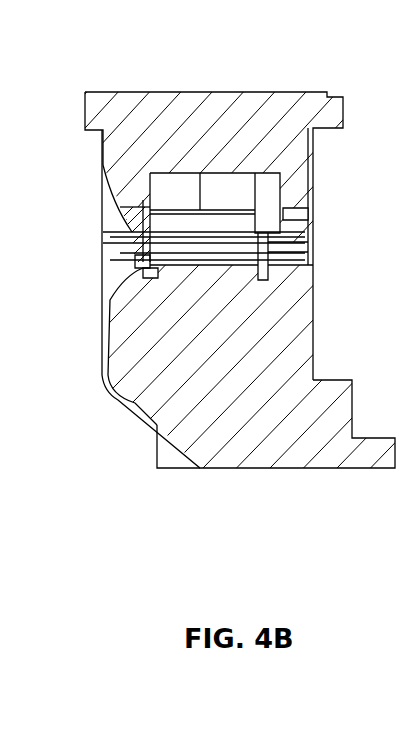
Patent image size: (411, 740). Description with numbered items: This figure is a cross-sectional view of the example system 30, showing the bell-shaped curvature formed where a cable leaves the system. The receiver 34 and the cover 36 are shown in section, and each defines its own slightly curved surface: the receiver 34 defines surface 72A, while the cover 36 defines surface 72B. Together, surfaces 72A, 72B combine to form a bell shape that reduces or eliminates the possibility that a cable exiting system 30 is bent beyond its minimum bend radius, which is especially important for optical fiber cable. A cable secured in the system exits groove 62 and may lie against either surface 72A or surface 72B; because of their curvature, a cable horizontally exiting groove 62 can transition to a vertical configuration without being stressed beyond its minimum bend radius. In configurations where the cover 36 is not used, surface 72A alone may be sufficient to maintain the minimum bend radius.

The system 30 is at (337, 63).
The cover 36 is at (200, 92).
The receiver 34 is at (135, 402).
The groove 62 is at (140, 243).
The surface 72A is at (115, 282).
The surface 72B is at (118, 196).